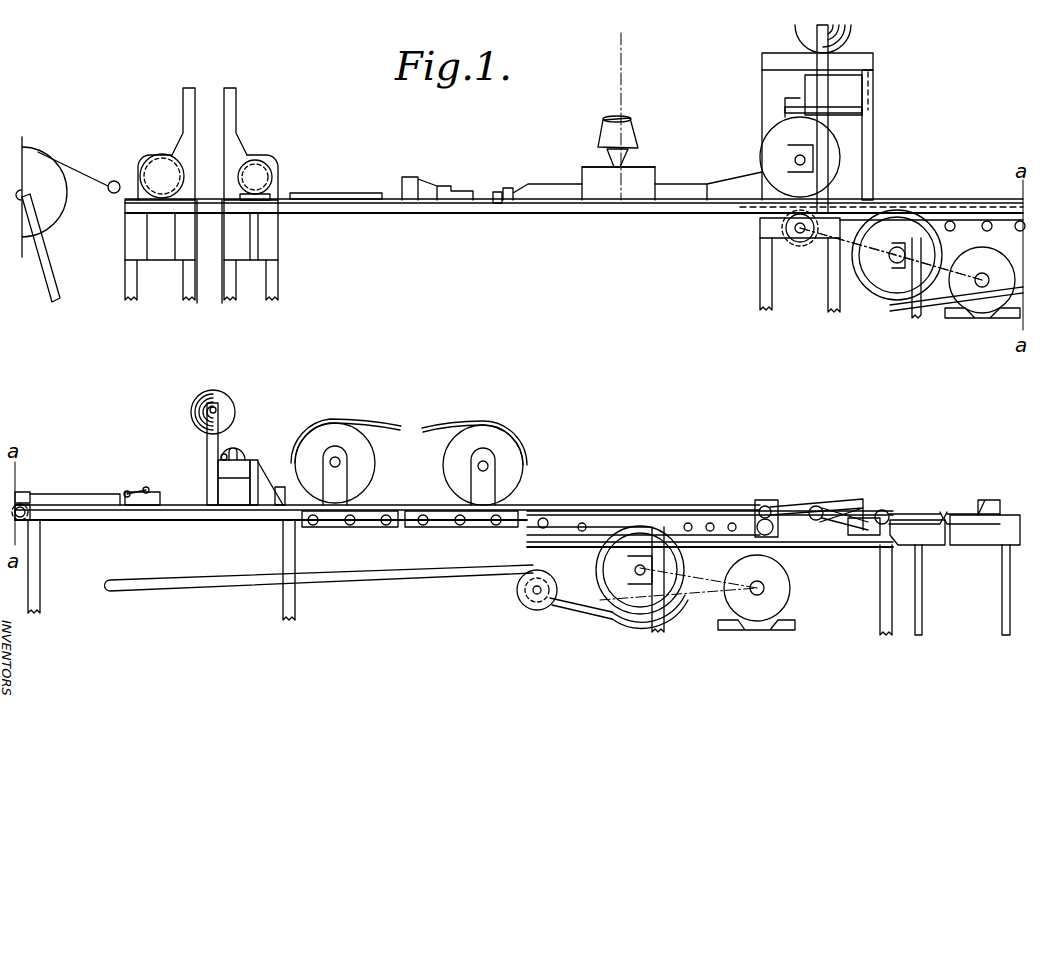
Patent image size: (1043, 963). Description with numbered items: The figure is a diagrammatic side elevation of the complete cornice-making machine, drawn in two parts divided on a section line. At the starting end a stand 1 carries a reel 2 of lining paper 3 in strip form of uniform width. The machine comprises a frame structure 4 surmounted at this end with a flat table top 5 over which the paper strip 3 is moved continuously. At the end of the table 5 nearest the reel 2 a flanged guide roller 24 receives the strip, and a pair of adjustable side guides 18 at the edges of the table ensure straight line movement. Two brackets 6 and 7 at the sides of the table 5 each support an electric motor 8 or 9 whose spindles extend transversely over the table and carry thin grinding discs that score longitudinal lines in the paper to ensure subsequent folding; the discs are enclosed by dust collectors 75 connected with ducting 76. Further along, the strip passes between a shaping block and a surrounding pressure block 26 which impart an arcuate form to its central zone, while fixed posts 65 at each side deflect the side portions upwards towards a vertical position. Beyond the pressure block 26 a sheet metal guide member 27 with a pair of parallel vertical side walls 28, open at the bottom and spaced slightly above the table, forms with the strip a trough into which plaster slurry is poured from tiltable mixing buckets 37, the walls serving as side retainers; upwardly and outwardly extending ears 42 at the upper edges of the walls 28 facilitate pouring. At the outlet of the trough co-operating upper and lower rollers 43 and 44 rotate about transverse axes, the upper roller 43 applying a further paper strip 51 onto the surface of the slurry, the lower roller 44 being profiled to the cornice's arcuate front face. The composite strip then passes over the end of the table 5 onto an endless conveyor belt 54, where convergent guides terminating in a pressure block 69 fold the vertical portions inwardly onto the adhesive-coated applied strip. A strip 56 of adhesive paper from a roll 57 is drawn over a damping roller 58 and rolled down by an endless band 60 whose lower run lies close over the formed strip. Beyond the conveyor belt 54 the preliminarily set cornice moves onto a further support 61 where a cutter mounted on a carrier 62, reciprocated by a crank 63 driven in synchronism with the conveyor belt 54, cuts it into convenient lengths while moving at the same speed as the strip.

The stand 1 is at (56, 280).
The reel 2 is at (33, 158).
The lining paper strip 3 is at (74, 178).
The frame structure 4 is at (300, 206).
The table top 5 is at (214, 212).
The bracket 6 is at (178, 222).
The bracket 7 is at (278, 222).
The electric motor 8 is at (148, 168).
The electric motor 9 is at (272, 164).
The adjustable side guides 18 is at (336, 193).
The flanged guide roller 24 is at (110, 192).
The pressure block 26 is at (458, 190).
The guide member 27 is at (594, 200).
The side walls 28 is at (668, 200).
The mixing buckets 37 is at (602, 140).
The ears 42 is at (645, 170).
The upper roller 43 is at (775, 140).
The lower roller 44 is at (802, 244).
The further paper strip 51 is at (762, 80).
The endless conveyor belt 54 is at (884, 294).
The strip of adhesive paper 56 is at (220, 430).
The roll 57 is at (210, 392).
The damping roller 58 is at (250, 462).
The endless band 60 is at (383, 432).
The further support 61 is at (802, 547).
The carrier 62 is at (792, 502).
The crank 63 is at (760, 508).
The fixed posts 65 is at (506, 188).
The pressure block 69 is at (70, 508).
The dust collectors 75 is at (152, 160).
The ducting 76 is at (233, 92).